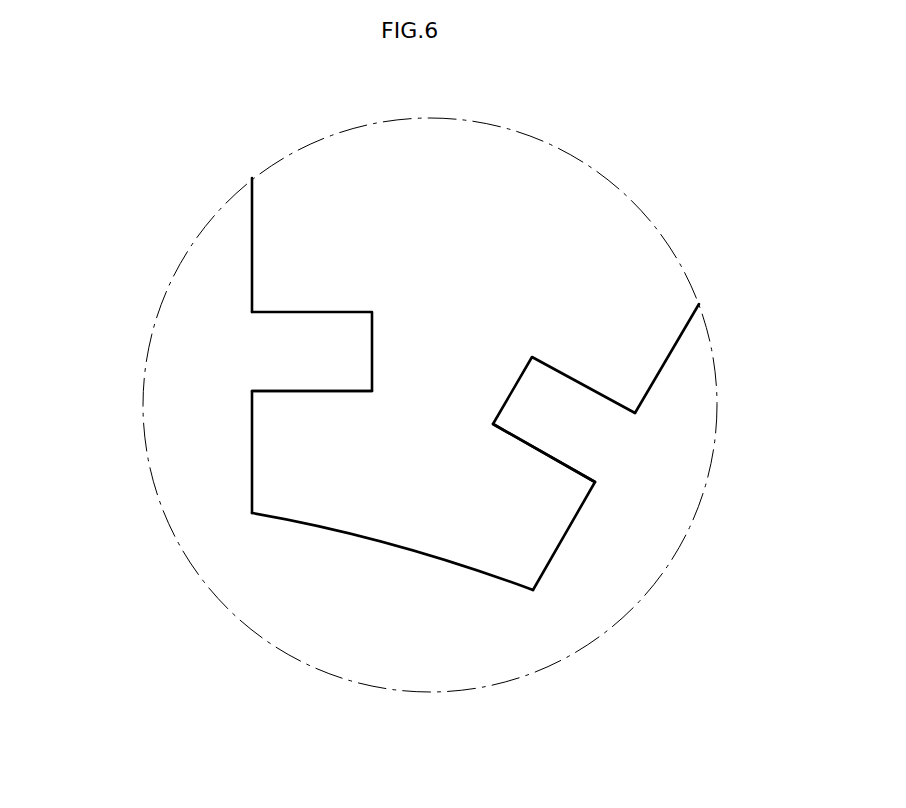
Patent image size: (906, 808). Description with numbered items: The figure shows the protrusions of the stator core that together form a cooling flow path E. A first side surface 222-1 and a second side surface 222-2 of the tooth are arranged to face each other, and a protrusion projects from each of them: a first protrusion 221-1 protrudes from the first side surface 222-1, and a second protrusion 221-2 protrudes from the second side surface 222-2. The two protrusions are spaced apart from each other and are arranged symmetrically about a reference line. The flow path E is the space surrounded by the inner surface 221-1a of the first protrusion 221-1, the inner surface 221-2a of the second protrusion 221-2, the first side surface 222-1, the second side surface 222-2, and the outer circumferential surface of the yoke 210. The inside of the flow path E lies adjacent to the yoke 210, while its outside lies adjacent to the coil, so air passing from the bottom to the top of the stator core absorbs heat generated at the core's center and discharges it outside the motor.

The yoke 210 is at (367, 607).
The first side surface 222-1 is at (253, 224).
The first protrusion 221-1 is at (295, 345).
The inner surface of the first protrusion 221-1a is at (318, 392).
The flow path E is at (326, 477).
The second side surface 222-2 is at (673, 347).
The second protrusion 221-2 is at (562, 425).
The inner surface of the second protrusion 221-2a is at (548, 457).